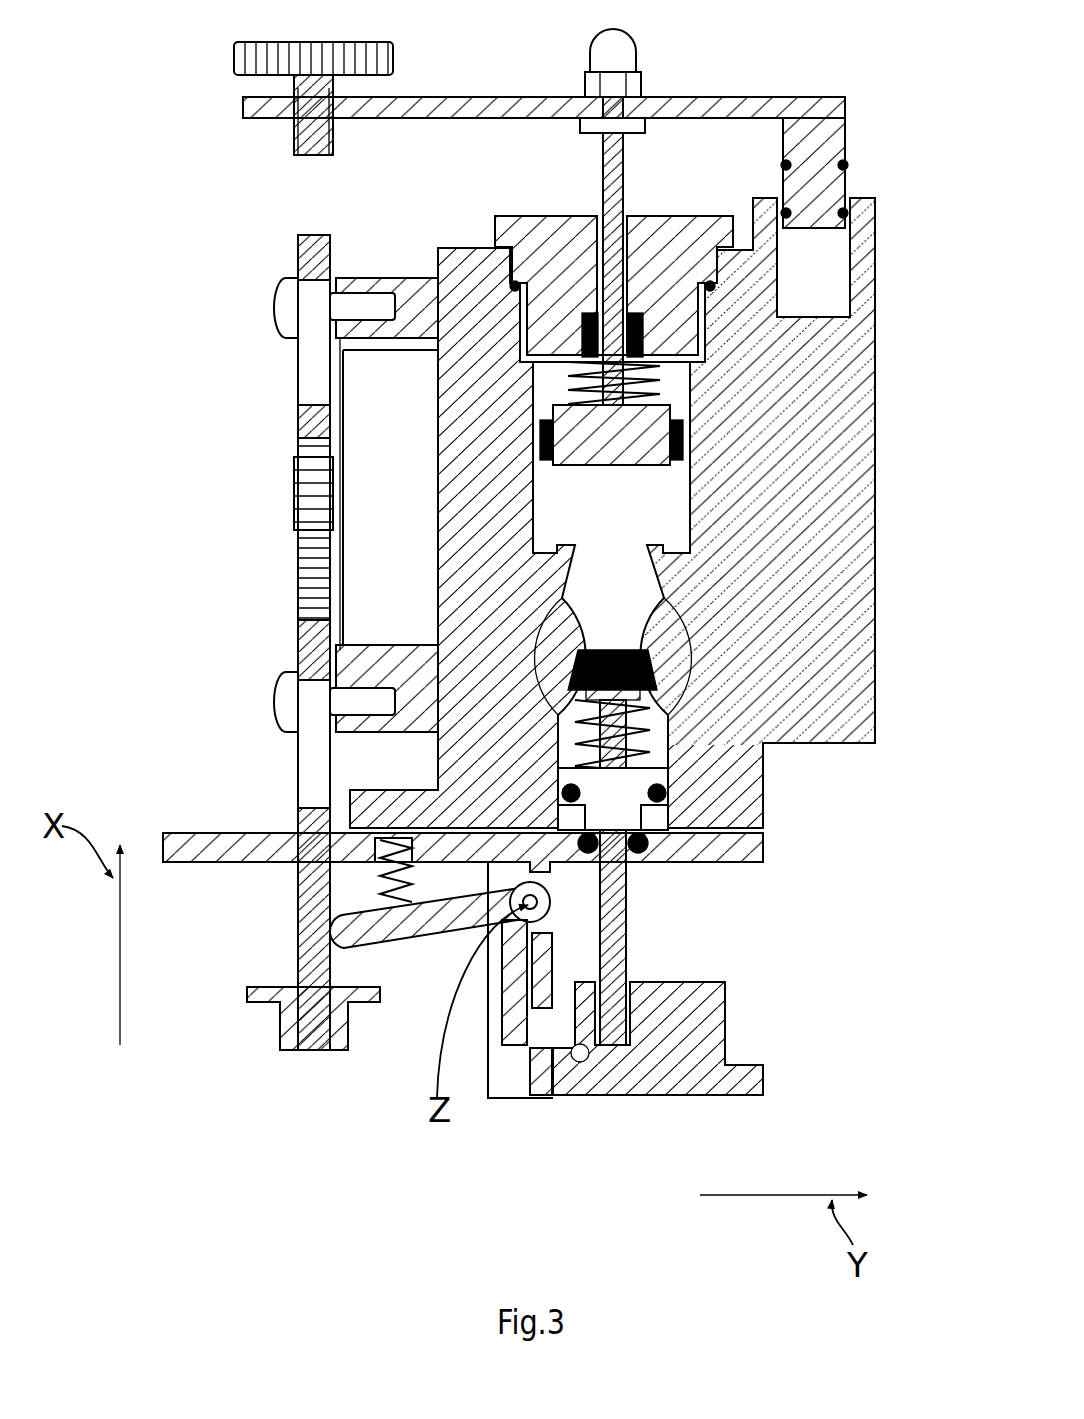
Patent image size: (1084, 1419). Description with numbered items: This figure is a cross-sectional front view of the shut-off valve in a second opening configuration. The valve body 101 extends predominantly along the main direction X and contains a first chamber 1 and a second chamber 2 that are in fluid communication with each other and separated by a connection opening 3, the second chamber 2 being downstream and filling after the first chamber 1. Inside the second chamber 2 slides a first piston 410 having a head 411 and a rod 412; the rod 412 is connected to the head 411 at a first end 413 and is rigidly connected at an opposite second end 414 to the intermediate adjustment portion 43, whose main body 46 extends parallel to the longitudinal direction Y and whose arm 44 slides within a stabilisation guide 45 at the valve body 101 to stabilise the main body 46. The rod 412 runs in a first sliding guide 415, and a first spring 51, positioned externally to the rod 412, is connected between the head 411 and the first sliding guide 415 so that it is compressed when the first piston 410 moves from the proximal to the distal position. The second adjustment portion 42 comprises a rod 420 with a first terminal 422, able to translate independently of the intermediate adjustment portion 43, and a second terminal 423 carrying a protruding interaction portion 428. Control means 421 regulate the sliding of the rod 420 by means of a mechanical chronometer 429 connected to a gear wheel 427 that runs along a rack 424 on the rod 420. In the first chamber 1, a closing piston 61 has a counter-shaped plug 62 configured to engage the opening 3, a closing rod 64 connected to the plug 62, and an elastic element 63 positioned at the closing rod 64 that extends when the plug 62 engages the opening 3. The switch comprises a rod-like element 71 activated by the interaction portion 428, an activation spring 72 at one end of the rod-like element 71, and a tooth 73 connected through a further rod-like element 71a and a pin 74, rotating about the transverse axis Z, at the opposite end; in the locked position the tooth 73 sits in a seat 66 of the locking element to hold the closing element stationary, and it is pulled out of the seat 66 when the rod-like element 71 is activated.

The first chamber 1 is at (647, 628).
The valve body 101 is at (833, 722).
The second chamber 2 is at (637, 502).
The connection opening 3 is at (613, 578).
The second adjustment portion 42 is at (230, 638).
The intermediate adjustment portion 43 is at (698, 66).
The arm 44 is at (848, 118).
The stabilisation guide 45 is at (835, 258).
The main body 46 is at (518, 97).
The first spring 51 is at (690, 385).
The closing piston 61 is at (650, 938).
The counter-shaped plug 62 is at (625, 685).
The elastic element 63 is at (667, 740).
The closing rod 64 is at (640, 885).
The seat 66 is at (703, 1072).
The rod-like element 71 is at (407, 920).
The further rod-like element 71a is at (523, 935).
The activation spring 72 is at (392, 838).
The tooth 73 is at (565, 1100).
The pin 74 is at (542, 1010).
The first piston 410 is at (700, 412).
The head 411 is at (597, 458).
The rod 412 is at (620, 272).
The first end 413 is at (668, 468).
The second end 414 is at (640, 128).
The first sliding guide 415 is at (595, 240).
The rod 420 is at (298, 752).
The control means 421 is at (380, 400).
The first terminal 422 is at (305, 262).
The second terminal 423 is at (288, 960).
The rack 424 is at (300, 577).
The gear wheel 427 is at (297, 502).
The interaction portion 428 is at (355, 1002).
The mechanical chronometer 429 is at (365, 452).